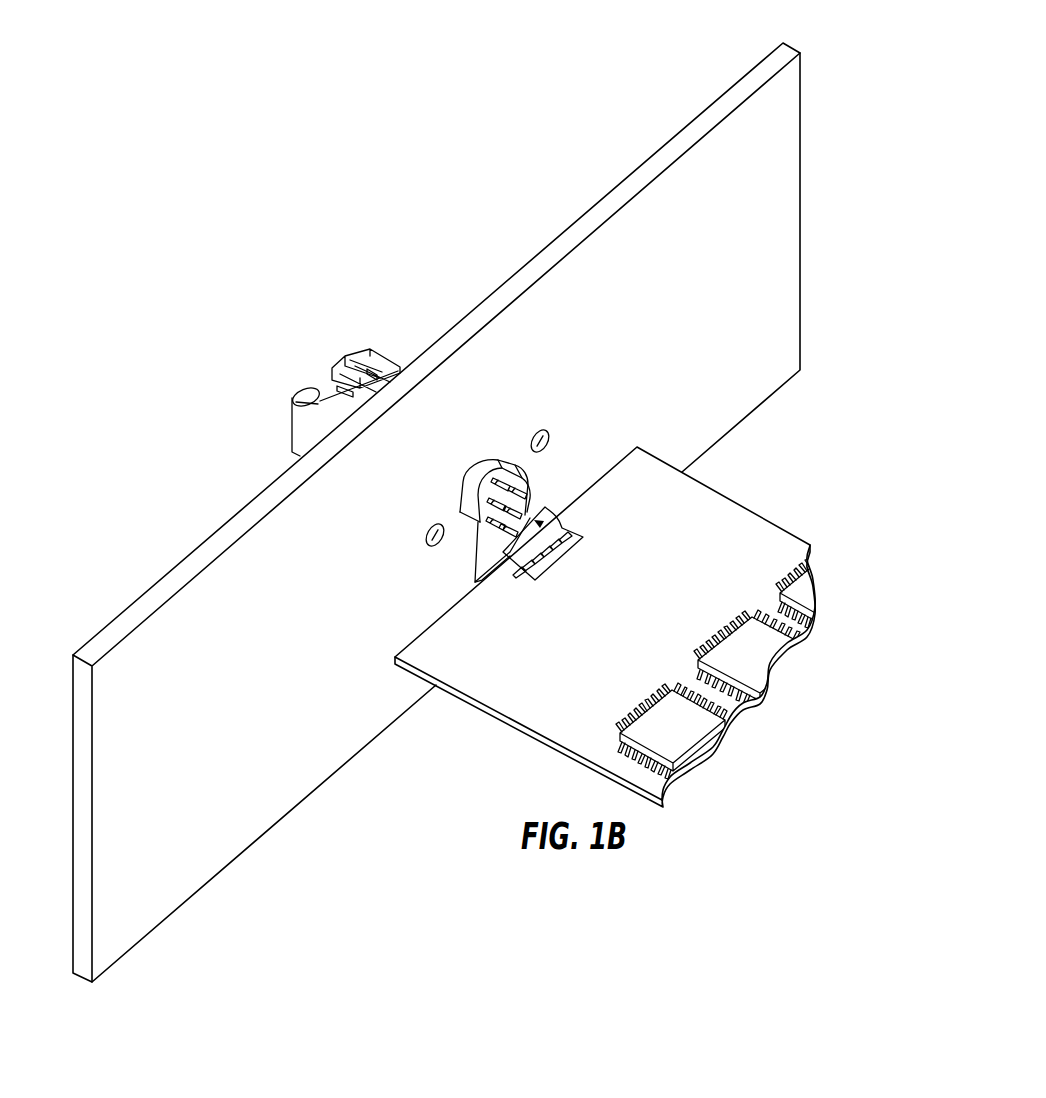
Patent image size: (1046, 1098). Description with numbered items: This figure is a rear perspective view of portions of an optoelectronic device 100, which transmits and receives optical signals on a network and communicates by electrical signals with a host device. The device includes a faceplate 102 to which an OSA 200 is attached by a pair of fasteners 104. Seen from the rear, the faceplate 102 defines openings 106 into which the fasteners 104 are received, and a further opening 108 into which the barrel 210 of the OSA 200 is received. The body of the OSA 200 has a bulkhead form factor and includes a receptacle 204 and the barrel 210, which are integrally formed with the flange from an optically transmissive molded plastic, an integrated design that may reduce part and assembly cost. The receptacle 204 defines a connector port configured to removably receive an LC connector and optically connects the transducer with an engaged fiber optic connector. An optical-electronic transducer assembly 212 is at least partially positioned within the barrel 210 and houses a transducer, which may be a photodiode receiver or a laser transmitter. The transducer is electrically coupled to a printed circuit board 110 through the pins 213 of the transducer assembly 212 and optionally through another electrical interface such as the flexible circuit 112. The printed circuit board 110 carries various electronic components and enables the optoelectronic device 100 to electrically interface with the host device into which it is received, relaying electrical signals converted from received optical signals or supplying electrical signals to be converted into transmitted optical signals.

The optoelectronic device 100 is at (510, 98).
The faceplate 102 is at (593, 217).
The fasteners 104 is at (550, 446).
The openings 106 is at (548, 430).
The opening 108 is at (514, 469).
The printed circuit board 110 is at (567, 727).
The flexible circuit 112 is at (470, 571).
The OSA 200 is at (288, 365).
The receptacle 204 is at (307, 423).
The barrel 210 is at (531, 470).
The optical-electronic transducer assembly 212 is at (568, 548).
The pins 213 is at (485, 518).